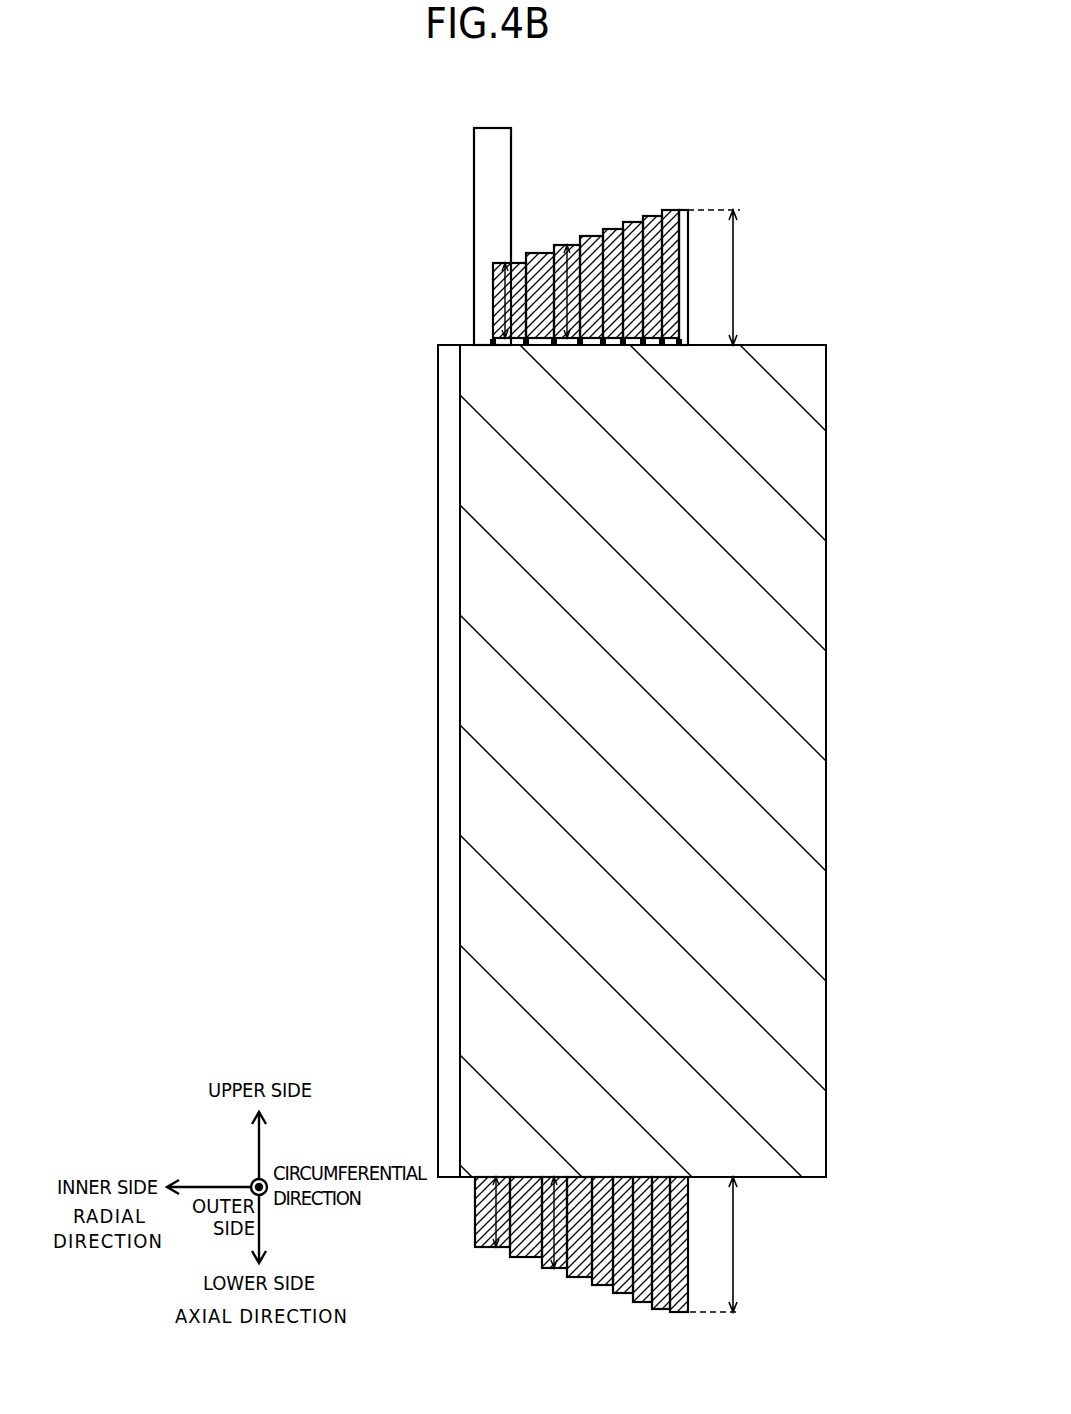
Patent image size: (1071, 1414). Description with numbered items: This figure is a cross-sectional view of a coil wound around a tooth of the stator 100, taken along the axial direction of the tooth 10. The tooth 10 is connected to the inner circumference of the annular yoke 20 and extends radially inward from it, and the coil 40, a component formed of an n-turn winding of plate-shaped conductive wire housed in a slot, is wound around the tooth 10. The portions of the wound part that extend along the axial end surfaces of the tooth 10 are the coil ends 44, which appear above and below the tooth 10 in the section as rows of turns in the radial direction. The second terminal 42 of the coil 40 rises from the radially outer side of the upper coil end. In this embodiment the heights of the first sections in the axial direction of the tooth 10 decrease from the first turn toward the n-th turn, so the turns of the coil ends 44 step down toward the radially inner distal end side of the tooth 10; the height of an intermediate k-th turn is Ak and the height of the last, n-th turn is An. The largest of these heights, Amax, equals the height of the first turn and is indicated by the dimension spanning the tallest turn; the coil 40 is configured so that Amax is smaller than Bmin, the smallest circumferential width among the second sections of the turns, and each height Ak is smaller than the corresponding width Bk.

The stator 100 is at (372, 137).
The tooth 10 is at (443, 335).
The yoke 20 is at (797, 333).
The coil 40 is at (556, 722).
The second terminal 42 is at (495, 138).
The coil ends 44 is at (593, 228).
The height of the n-th turn first section An is at (503, 305).
The height of the k-th turn first section Ak is at (565, 287).
The largest first-section height Amax is at (766, 761).